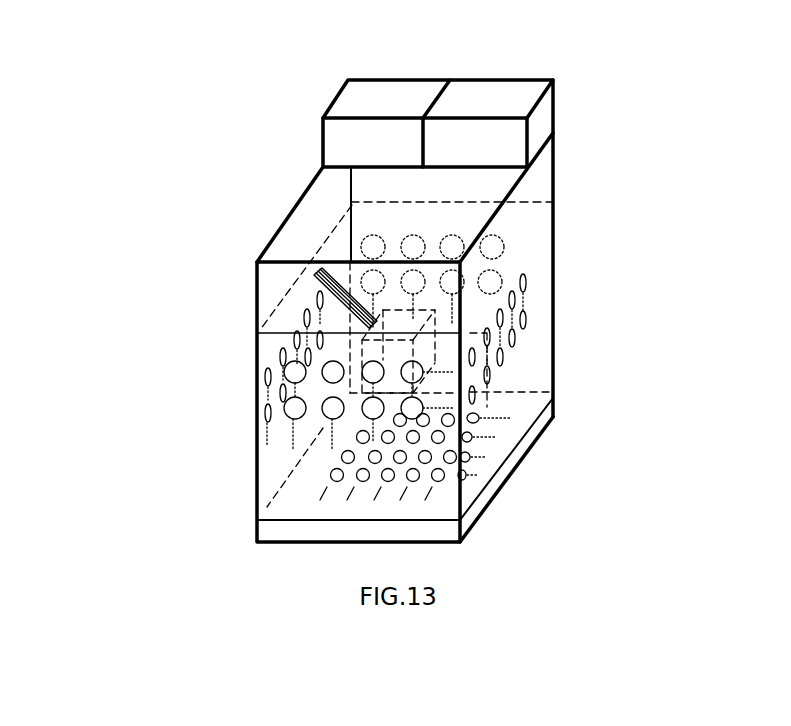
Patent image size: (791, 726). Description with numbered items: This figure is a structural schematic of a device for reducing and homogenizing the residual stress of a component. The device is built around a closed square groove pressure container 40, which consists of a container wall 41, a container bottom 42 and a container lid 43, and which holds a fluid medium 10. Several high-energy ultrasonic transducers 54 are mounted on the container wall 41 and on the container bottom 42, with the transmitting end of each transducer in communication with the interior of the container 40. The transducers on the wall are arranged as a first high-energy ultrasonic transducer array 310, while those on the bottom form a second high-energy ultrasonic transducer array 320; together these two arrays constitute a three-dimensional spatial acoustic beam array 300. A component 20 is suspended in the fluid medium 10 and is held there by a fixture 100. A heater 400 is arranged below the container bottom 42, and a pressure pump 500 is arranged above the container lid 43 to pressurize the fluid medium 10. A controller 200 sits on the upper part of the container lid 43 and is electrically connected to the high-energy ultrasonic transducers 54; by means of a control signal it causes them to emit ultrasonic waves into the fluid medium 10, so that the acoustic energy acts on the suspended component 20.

The fluid medium 10 is at (470, 218).
The component 20 is at (392, 322).
The closed square groove pressure container 40 is at (323, 207).
The container wall 41 is at (443, 225).
The container bottom 42 is at (447, 500).
The container lid 43 is at (478, 236).
The high-energy ultrasonic transducer 54 is at (473, 417).
The fixture 100 is at (305, 262).
The controller 200 is at (367, 100).
The 3D spatial acoustic beam array 300 is at (222, 333).
The first high-energy ultrasonic transducer array 310 is at (295, 410).
The second high-energy ultrasonic transducer array 320 is at (340, 475).
The heater 400 is at (518, 453).
The pressure pump 500 is at (512, 93).